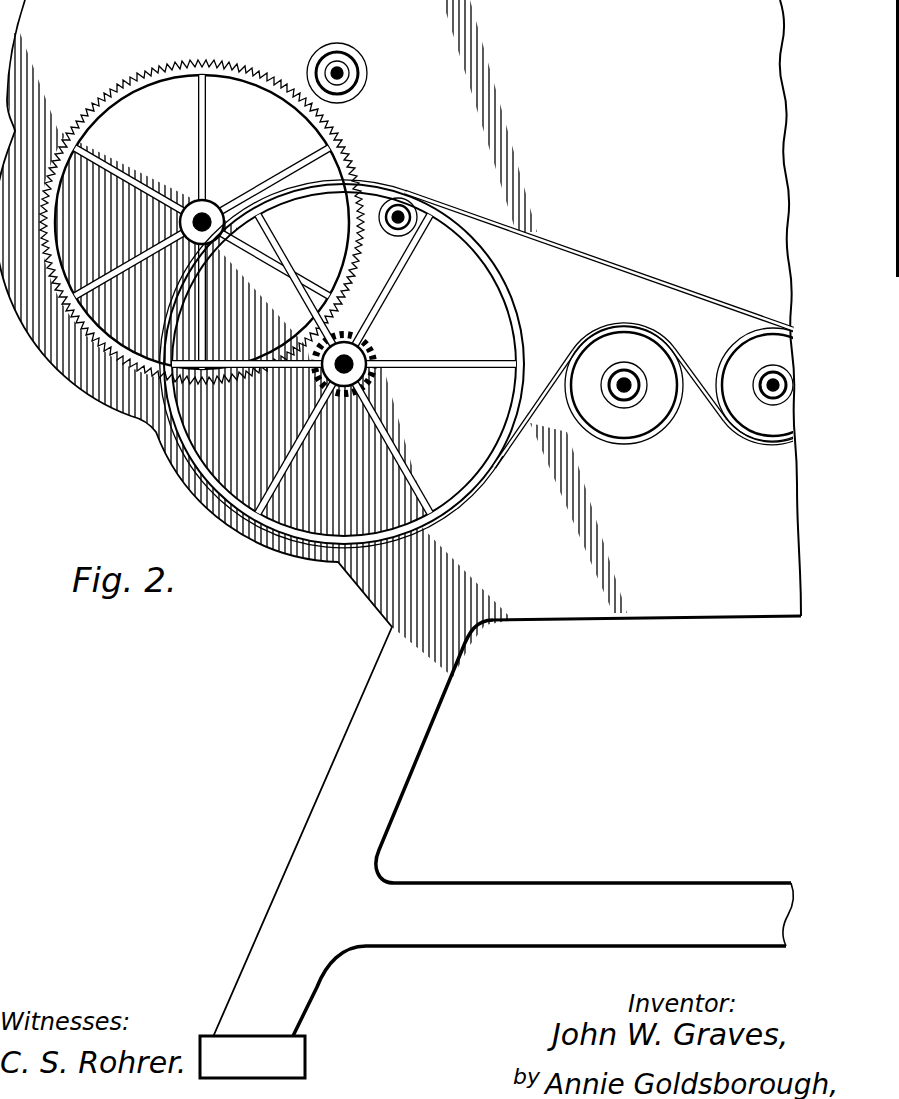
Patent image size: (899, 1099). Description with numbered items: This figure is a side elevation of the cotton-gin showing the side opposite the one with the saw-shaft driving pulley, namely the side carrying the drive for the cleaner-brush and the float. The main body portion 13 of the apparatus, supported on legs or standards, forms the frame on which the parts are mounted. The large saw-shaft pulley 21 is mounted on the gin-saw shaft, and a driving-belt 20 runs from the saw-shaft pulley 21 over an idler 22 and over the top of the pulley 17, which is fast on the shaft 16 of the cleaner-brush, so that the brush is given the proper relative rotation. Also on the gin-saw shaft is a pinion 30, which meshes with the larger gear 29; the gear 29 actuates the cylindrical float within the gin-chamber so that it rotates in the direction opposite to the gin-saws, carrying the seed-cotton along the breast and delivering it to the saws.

The main body portion 13 is at (449, 539).
The shaft 16 is at (637, 372).
The pulley 17 is at (662, 413).
The driving-belt 20 is at (627, 270).
The saw-shaft pulley 21 is at (510, 297).
The idler 22 is at (773, 385).
The gear 29 is at (128, 82).
The pinion 30 is at (377, 340).